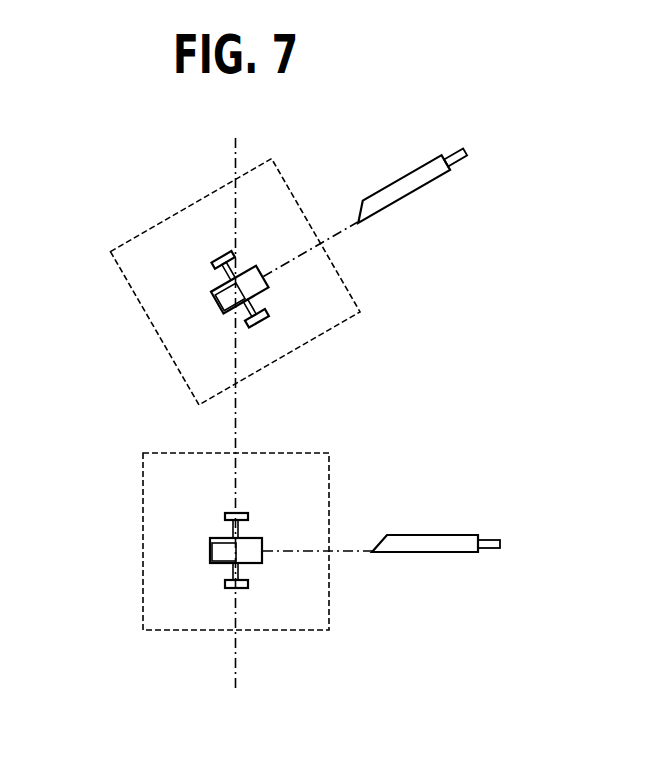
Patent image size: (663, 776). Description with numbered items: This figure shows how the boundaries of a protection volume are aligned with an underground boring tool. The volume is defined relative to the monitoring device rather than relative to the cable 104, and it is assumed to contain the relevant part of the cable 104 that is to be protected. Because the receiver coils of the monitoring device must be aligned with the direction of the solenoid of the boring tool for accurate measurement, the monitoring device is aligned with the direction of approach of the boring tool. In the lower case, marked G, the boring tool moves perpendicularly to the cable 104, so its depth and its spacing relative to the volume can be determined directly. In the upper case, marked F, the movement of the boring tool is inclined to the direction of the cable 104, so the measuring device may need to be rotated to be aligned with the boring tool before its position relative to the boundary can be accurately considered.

The cable 104 is at (238, 426).